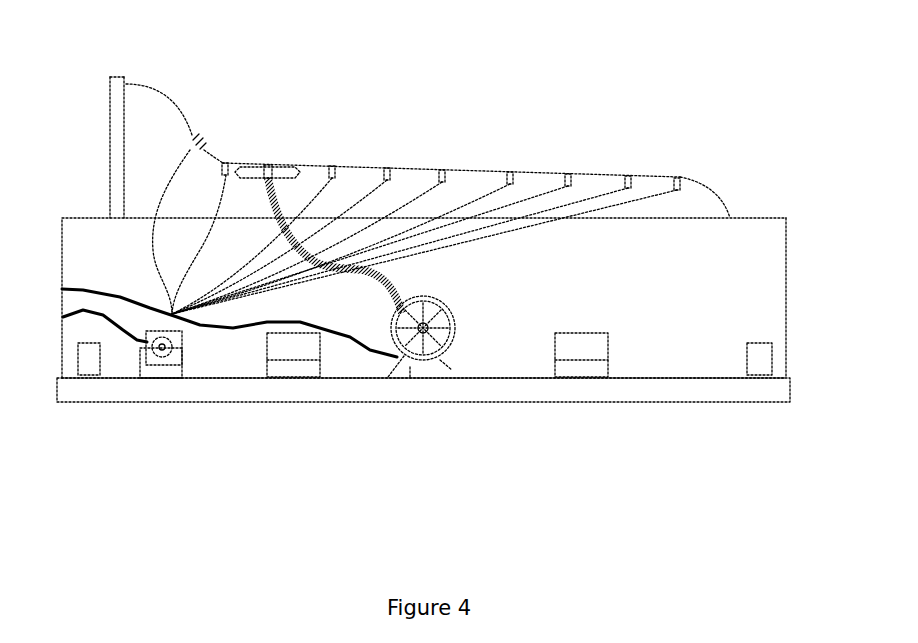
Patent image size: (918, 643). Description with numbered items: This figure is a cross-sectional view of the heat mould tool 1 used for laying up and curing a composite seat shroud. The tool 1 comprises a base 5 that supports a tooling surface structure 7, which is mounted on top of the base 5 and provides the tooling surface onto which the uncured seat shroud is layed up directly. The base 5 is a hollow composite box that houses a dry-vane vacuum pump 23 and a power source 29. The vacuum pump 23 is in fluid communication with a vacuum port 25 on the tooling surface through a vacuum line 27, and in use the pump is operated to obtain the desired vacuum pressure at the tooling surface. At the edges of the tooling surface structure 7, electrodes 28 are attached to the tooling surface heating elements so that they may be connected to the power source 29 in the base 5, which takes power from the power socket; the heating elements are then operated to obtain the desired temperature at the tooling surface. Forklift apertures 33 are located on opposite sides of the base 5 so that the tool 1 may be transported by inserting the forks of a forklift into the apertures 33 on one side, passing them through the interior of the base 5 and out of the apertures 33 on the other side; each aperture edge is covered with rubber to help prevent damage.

The tool 1 is at (120, 53).
The base 5 is at (712, 428).
The tooling surface structure 7 is at (486, 136).
The dry-vane vacuum pump 23 is at (425, 348).
The vacuum port 25 is at (268, 168).
The vacuum line 27 is at (363, 277).
The electrodes 28 is at (568, 173).
The power source 29 is at (162, 356).
The forklift apertures 33 is at (580, 350).